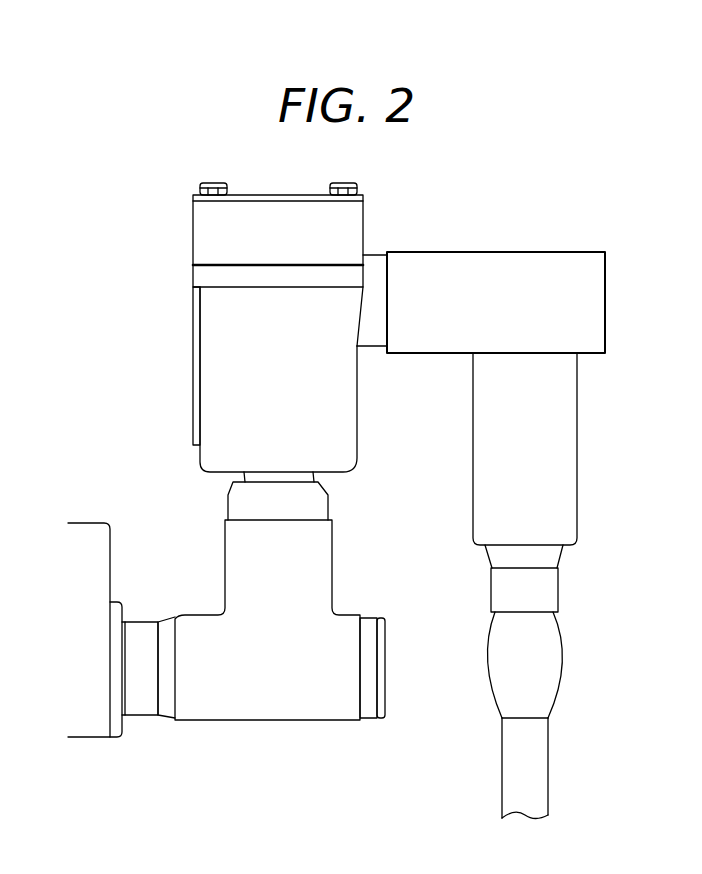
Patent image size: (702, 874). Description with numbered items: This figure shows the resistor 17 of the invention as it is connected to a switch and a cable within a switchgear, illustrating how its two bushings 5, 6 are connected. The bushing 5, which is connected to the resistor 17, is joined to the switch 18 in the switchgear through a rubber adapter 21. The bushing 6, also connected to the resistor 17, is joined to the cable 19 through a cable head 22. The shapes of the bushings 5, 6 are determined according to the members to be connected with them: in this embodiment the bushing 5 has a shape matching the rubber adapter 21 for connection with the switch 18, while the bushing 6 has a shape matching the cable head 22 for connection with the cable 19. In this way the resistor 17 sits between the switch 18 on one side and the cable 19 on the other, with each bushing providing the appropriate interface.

The bushing 5 is at (272, 477).
The bushing 6 is at (374, 272).
The resistor 17 is at (215, 313).
The switch 18 is at (77, 550).
The cable 19 is at (532, 744).
The rubber adapter 21 is at (237, 555).
The cable head 22 is at (562, 445).